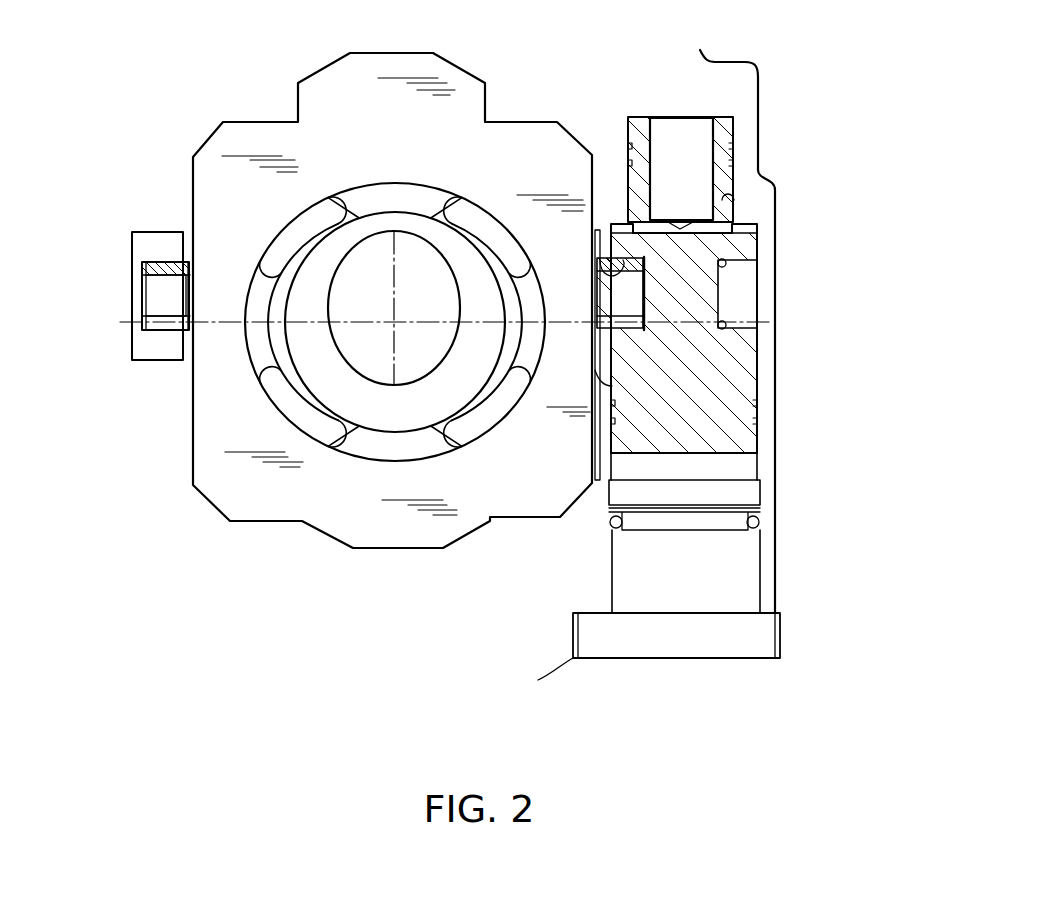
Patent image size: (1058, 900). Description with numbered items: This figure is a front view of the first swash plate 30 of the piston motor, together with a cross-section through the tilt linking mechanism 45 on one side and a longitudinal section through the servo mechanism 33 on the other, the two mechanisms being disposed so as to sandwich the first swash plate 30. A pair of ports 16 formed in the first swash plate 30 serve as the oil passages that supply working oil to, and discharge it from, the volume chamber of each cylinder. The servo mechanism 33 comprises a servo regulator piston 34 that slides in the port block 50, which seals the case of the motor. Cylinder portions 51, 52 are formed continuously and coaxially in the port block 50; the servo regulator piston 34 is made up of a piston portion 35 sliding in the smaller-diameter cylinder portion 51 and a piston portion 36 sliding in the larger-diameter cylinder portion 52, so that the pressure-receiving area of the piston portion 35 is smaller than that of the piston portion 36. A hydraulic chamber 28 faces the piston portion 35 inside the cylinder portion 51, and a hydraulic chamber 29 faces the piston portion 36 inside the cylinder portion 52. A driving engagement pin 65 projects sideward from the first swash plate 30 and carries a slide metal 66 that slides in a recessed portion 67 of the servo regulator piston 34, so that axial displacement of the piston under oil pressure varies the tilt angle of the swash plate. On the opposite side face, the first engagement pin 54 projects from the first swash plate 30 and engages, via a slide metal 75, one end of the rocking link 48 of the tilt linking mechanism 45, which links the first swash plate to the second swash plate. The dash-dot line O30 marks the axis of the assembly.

The ports 16 is at (262, 373).
The hydraulic chamber 28 is at (692, 128).
The hydraulic chamber 29 is at (745, 470).
The first swash plate 30 is at (223, 122).
The center axis of housing O30 is at (228, 326).
The servo mechanism 33 is at (778, 306).
The servo regulator piston 34 is at (719, 310).
The piston portion 35 is at (700, 144).
The piston portion 36 is at (758, 428).
The tilt linking mechanism 45 is at (177, 279).
The rocking link 48 is at (155, 232).
The port block 50 is at (733, 62).
The cylinder portion 51 is at (735, 205).
The cylinder portion 52 is at (762, 456).
The first engagement pin 54 is at (153, 304).
The driving engagement pin 65 is at (632, 302).
The slide metal 66 is at (645, 265).
The recessed portion 67 is at (600, 258).
The slide metal 75 is at (160, 330).